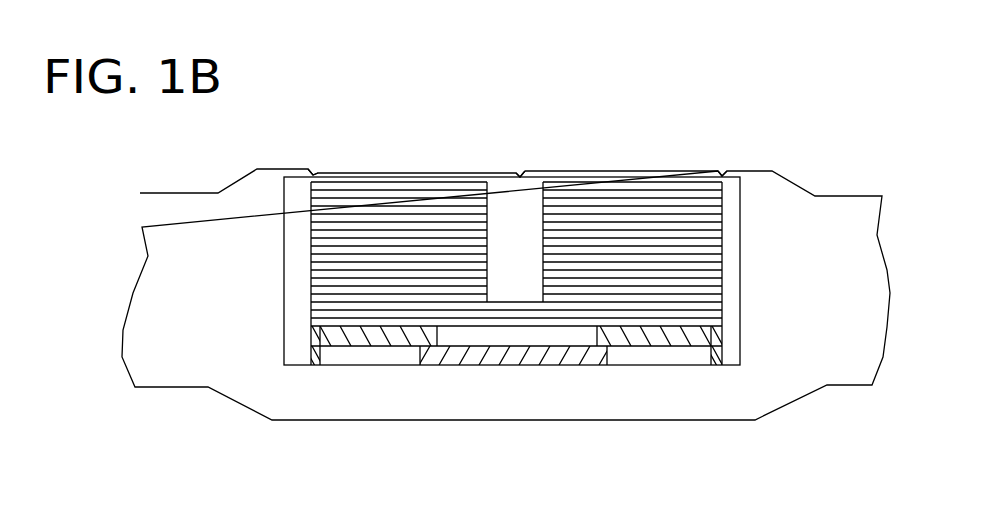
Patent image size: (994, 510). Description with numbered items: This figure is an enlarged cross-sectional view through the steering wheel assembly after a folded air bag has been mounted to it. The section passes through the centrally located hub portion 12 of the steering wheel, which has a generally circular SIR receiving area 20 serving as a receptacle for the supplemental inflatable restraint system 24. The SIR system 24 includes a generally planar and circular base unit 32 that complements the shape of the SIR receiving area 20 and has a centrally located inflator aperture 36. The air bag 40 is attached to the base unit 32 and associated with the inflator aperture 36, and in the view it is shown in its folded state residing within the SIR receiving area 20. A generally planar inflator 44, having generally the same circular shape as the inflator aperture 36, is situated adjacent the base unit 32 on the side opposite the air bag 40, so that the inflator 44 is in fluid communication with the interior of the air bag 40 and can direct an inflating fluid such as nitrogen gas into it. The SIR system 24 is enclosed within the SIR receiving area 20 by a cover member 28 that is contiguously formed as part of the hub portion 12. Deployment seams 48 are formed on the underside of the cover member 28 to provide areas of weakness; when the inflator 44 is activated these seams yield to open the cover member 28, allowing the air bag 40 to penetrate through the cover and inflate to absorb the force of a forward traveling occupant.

The hub portion 12 is at (245, 351).
The SIR receiving area 20 is at (730, 347).
The supplemental inflatable restraint system 24 is at (508, 208).
The cover member 28 is at (655, 170).
The base unit 32 is at (665, 340).
The inflator aperture 36 is at (438, 335).
The air bag 40 is at (603, 228).
The inflator 44 is at (553, 357).
The deployment seams 48 is at (313, 172).